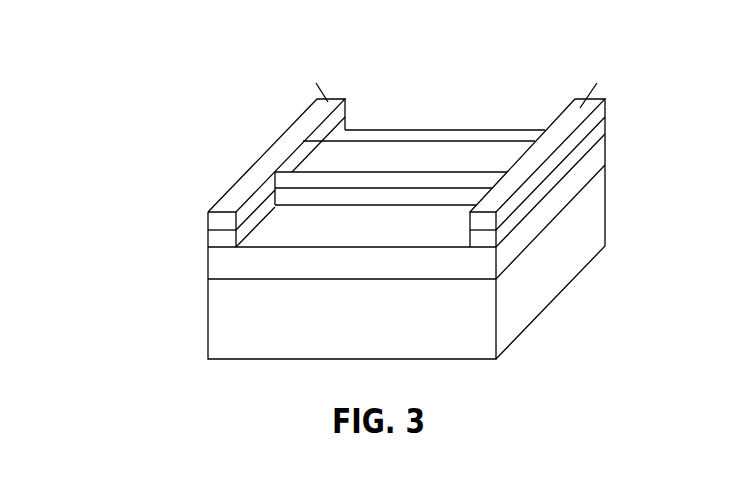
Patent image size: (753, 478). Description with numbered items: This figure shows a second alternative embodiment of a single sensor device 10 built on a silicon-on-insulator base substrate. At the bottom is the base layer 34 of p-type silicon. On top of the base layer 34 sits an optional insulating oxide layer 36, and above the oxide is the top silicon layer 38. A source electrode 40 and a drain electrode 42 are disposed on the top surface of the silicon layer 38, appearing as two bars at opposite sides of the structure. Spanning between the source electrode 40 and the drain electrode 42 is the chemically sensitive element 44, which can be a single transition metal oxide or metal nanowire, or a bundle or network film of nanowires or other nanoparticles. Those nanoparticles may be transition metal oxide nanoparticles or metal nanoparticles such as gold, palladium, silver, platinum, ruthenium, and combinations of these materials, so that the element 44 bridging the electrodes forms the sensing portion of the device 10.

The single sensor device 10 is at (140, 70).
The base layer 34 is at (417, 347).
The insulating oxide layer 36 is at (582, 178).
The top silicon layer 38 is at (213, 238).
The source electrode 40 is at (297, 57).
The drain electrode 42 is at (605, 50).
The chemically sensitive element 44 is at (417, 152).